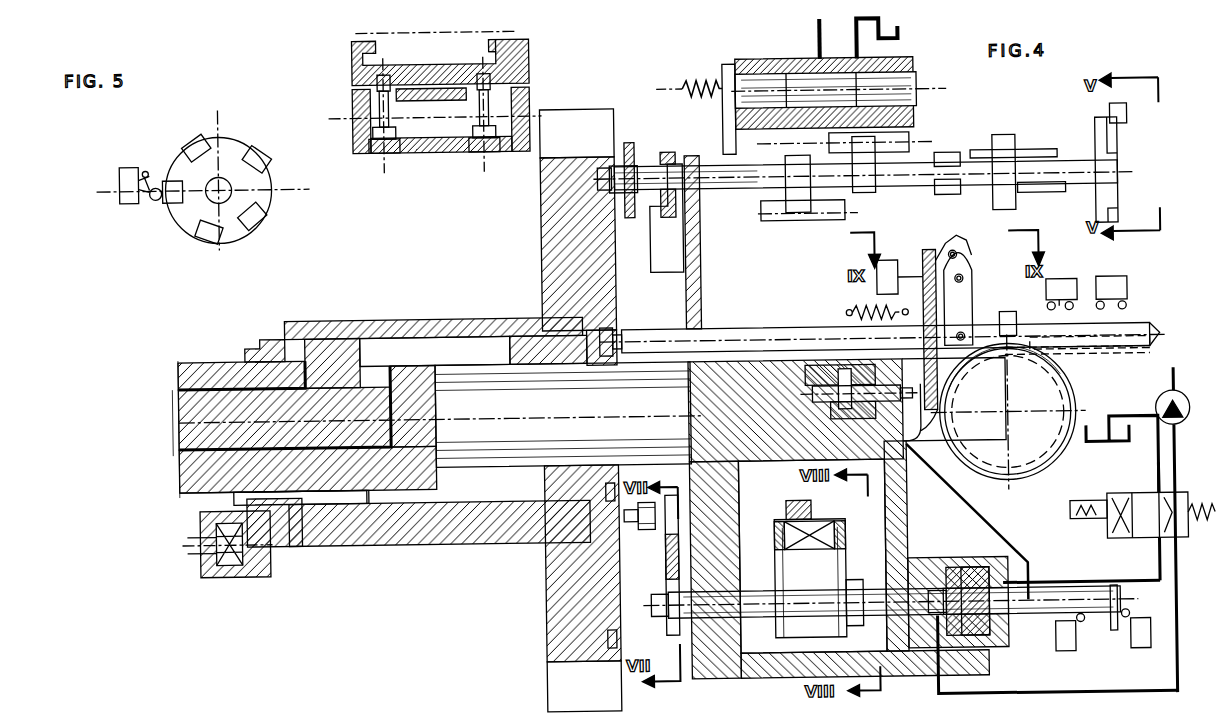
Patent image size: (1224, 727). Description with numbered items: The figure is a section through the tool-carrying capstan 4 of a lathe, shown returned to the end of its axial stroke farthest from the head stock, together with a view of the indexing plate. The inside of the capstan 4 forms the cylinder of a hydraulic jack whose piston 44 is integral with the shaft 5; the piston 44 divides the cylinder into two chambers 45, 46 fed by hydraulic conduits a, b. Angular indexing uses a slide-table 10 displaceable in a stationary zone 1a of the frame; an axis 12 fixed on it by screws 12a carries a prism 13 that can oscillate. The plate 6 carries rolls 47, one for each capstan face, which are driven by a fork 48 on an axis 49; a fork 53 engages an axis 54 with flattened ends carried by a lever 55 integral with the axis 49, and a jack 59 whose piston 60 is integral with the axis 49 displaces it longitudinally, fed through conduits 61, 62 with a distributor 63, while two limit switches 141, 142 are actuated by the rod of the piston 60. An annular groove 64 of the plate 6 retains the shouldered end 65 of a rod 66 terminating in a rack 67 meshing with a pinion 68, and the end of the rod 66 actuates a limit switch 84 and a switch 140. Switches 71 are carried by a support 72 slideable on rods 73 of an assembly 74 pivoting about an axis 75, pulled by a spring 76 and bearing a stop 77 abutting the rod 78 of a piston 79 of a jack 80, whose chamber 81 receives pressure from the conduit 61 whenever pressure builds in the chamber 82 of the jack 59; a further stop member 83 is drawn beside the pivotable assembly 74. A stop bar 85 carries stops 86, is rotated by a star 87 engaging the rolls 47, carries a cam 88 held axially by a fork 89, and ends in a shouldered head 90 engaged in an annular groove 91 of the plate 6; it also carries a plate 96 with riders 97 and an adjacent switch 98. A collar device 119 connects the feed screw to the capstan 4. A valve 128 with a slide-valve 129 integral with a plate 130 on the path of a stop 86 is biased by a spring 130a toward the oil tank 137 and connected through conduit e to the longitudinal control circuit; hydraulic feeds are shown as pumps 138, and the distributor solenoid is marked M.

In FIG. 4, the stationary zone 1a is at (505, 44).
In FIG. 4, the capstan 4 is at (382, 317).
In FIG. 4, the shaft 5 is at (470, 470).
In FIG. 4, the plate 6 is at (548, 600).
In FIG. 4, the slide-table 10 is at (533, 60).
In FIG. 4, the axis 12 is at (362, 112).
In FIG. 4, the screws 12a is at (487, 112).
In FIG. 4, the prism 13 is at (438, 152).
In FIG. 4, the piston 44 is at (338, 530).
In FIG. 4, the chamber 45 is at (300, 342).
In FIG. 4, the chamber 46 is at (432, 355).
In FIG. 4, the rolls 47 is at (645, 530).
In FIG. 4, the fork 48 is at (664, 583).
In FIG. 4, the axis 49 is at (852, 600).
In FIG. 4, the fork 53 is at (810, 510).
In FIG. 4, the axis 54 is at (834, 530).
In FIG. 4, the lever 55 is at (784, 625).
In FIG. 4, the jack 59 is at (945, 562).
In FIG. 4, the piston 60 is at (980, 615).
In FIG. 4, the hydraulic conduit 61 is at (1083, 588).
In FIG. 4, the hydraulic conduit 62 is at (1093, 696).
In FIG. 4, the distributor 63 is at (1160, 505).
In FIG. 4, the annular groove 64 is at (548, 560).
In FIG. 4, the shouldered end 65 is at (612, 328).
In FIG. 4, the rod 66 is at (738, 330).
In FIG. 4, the rack 67 is at (1128, 352).
In FIG. 4, the pinion 68 is at (1075, 395).
In FIG. 4, the switch 71 is at (1004, 353).
In FIG. 4, the support 72 is at (965, 300).
In FIG. 4, the rods 73 is at (968, 340).
In FIG. 4, the assembly 74 is at (928, 254).
In FIG. 4, the axis 75 is at (956, 255).
In FIG. 4, the spring 76 is at (856, 316).
In FIG. 4, the stop 77 is at (912, 405).
In FIG. 4, the rod 78 is at (886, 392).
In FIG. 4, the piston 79 is at (845, 388).
In FIG. 4, the jack 80 is at (862, 415).
In FIG. 4, the chamber 81 is at (830, 378).
In FIG. 4, the chamber 82 is at (995, 560).
In FIG. 4, the stop 83 is at (888, 264).
In FIG. 4, the limit switch 84 is at (1100, 295).
In FIG. 4, the stop bar 85 is at (728, 192).
In FIG. 4, the stops 86 is at (1050, 192).
In FIG. 4, the star 87 is at (631, 143).
In FIG. 4, the cam 88 is at (658, 232).
In FIG. 4, the fork 89 is at (668, 222).
In FIG. 4, the shouldered head 90 is at (606, 168).
In FIG. 4, the annular groove 91 is at (546, 635).
In FIG. 5, the plate 96 is at (266, 195).
In FIG. 4, the plate 96 is at (1118, 152).
In FIG. 5, the riders 97 is at (262, 150).
In FIG. 4, the riders 97 is at (1130, 125).
In FIG. 5, the index switch 98 is at (128, 178).
In FIG. 4, the collar device 119 is at (250, 566).
In FIG. 4, the valve 128 is at (912, 60).
In FIG. 4, the slide-valve 129 is at (912, 82).
In FIG. 4, the plate 130 is at (726, 135).
In FIG. 4, the spring 130a is at (686, 76).
In FIG. 4, the oil tank 137 is at (1092, 448).
In FIG. 4, the pumps 138 is at (1184, 400).
In FIG. 4, the switch 140 is at (1066, 292).
In FIG. 4, the limit switch 141 is at (1136, 645).
In FIG. 4, the limit switch 142 is at (1052, 638).
In FIG. 4, the hydraulic conduit a is at (234, 381).
In FIG. 4, the hydraulic conduit b is at (276, 414).
In FIG. 4, the conduit e is at (815, 30).
In FIG. 4, the valve solenoid M is at (1088, 509).